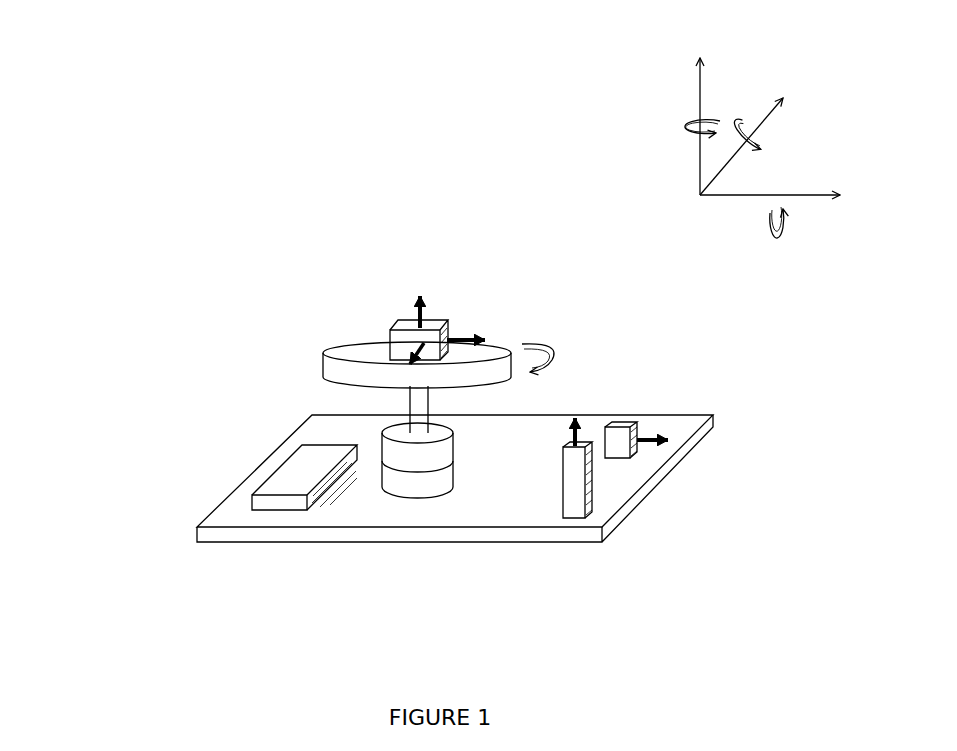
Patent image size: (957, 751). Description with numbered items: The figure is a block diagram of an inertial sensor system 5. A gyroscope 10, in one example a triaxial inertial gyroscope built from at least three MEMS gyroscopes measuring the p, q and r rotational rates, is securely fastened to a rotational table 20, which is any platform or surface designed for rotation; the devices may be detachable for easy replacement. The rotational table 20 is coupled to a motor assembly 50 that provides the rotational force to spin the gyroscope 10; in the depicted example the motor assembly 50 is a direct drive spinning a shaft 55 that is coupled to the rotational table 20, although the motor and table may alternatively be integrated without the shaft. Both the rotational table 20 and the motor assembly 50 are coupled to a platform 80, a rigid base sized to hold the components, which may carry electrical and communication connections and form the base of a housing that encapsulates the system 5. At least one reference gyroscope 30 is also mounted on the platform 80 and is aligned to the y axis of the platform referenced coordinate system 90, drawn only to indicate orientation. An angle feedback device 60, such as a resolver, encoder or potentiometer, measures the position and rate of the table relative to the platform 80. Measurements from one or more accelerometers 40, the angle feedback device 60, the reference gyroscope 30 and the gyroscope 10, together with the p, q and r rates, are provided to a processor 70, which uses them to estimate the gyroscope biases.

The inertial sensor system 5 is at (236, 145).
The gyroscope 10 is at (452, 328).
The rotational table 20 is at (323, 365).
The reference gyroscope 30 is at (625, 417).
The accelerometer 40 is at (587, 485).
The motor assembly 50 is at (383, 445).
The shaft 55 is at (407, 415).
The angle feedback device 60 is at (377, 472).
The processor 70 is at (250, 502).
The platform 80 is at (398, 530).
The platform referenced coordinate system 90 is at (628, 127).